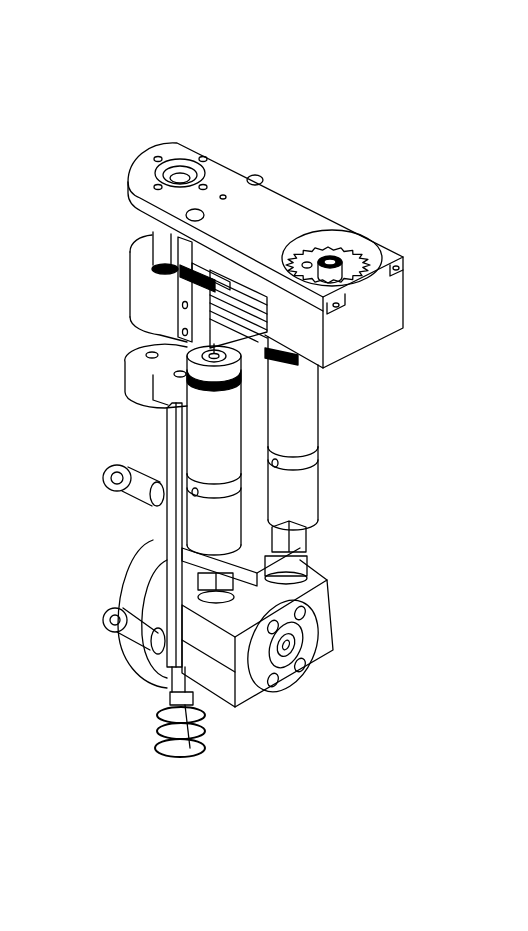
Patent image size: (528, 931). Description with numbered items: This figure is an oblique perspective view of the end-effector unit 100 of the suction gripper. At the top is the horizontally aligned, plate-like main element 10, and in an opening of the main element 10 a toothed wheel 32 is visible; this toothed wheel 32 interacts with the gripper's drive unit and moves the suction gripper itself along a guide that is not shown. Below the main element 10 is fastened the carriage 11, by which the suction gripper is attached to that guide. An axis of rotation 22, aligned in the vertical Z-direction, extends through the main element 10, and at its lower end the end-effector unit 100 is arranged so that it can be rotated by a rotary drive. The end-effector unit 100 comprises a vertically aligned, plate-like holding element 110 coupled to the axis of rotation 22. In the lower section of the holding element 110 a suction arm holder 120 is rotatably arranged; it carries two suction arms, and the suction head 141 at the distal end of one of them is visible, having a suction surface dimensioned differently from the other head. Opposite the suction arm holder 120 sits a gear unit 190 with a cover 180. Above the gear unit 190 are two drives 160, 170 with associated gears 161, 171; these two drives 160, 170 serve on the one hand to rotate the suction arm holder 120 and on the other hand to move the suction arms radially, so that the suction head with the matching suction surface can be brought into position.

The end-effector unit 100 is at (140, 130).
The main element 10 is at (262, 214).
The toothed wheel 32 is at (350, 268).
The carriage 11 is at (160, 264).
The axis of rotation 22 is at (177, 352).
The holding element 110 is at (172, 463).
The drive 160 is at (292, 392).
The drive 170 is at (215, 445).
The gear 161 is at (292, 488).
The gear 171 is at (215, 518).
The cover 180 is at (322, 597).
The suction arm holder 120 is at (127, 668).
The gear unit 190 is at (312, 707).
The suction head 141 is at (192, 745).